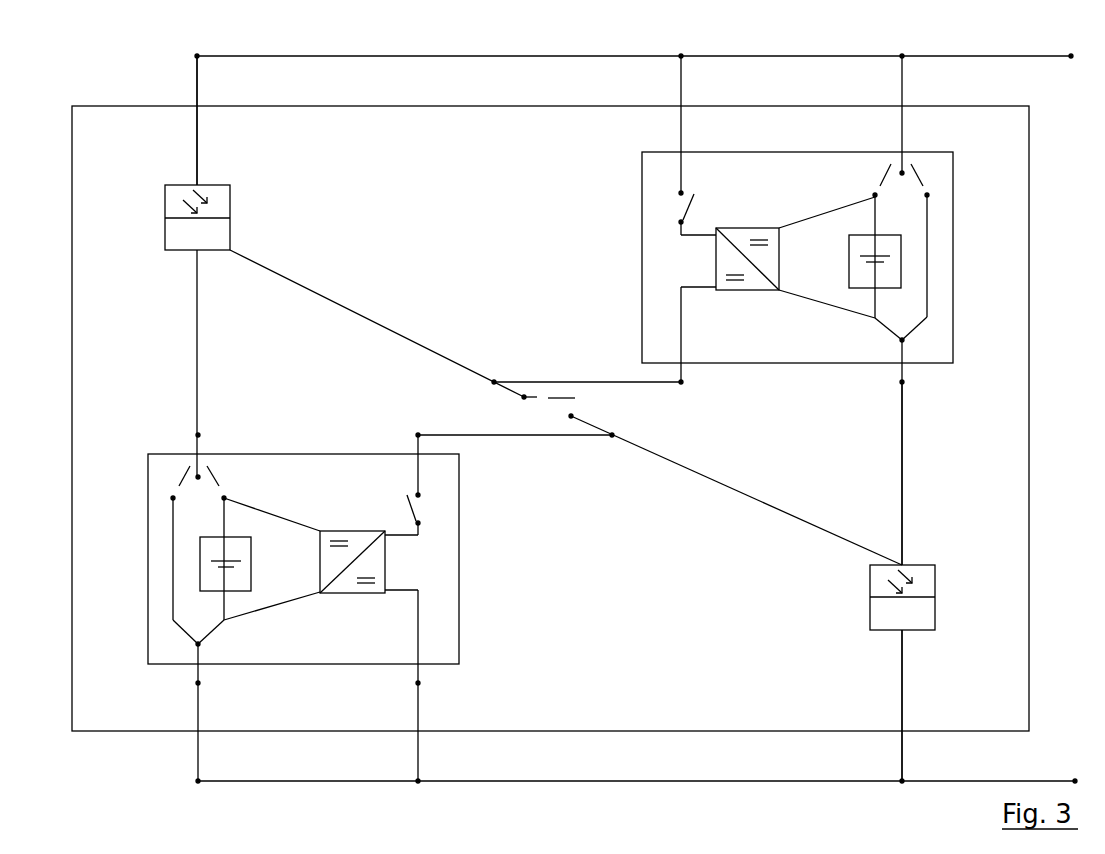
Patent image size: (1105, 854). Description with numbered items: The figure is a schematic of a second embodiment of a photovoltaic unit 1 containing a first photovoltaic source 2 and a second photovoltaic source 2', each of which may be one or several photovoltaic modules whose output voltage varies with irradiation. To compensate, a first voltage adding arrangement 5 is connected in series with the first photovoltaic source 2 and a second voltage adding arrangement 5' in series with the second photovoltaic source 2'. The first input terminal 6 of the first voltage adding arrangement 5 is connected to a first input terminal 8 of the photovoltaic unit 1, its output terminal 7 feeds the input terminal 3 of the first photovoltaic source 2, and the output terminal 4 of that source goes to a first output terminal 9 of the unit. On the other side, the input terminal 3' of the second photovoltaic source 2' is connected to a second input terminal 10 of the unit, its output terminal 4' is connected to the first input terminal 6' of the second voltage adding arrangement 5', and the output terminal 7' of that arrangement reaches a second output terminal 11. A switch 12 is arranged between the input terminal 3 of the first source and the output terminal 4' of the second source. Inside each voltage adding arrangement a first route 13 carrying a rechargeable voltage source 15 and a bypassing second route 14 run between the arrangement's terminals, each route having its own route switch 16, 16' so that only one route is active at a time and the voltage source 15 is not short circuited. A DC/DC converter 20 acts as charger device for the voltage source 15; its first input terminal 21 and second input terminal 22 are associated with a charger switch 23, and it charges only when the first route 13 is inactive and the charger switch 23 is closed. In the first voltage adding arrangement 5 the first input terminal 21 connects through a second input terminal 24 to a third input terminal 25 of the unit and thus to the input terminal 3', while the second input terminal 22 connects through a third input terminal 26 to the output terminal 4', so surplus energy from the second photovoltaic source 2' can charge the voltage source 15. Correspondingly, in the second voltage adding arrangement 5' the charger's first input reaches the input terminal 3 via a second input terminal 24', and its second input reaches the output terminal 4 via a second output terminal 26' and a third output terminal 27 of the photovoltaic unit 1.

The photovoltaic unit 1 is at (108, 120).
The first photovoltaic source 2 is at (228, 217).
The second photovoltaic source 2' is at (870, 597).
The input terminal of first photovoltaic source 3 is at (168, 363).
The input terminal of second photovoltaic source 3' is at (874, 705).
The output terminal of first photovoltaic source 4 is at (223, 120).
The output terminal of second photovoltaic source 4' is at (938, 473).
The first voltage adding arrangement 5 is at (332, 559).
The second voltage adding arrangement 5' is at (764, 257).
The first input terminal of first voltage adding arrangement 6 is at (226, 712).
The first input terminal of second voltage adding arrangement 6' is at (873, 452).
The output terminal of first voltage adding arrangement 7 is at (224, 407).
The output terminal of second voltage adding arrangement 7' is at (872, 122).
The first input terminal of photovoltaic unit 8 is at (200, 781).
The first output terminal of photovoltaic unit 9 is at (199, 58).
The second input terminal of photovoltaic unit 10 is at (904, 779).
The second output terminal of photovoltaic unit 11 is at (904, 58).
The switch 12 is at (548, 398).
The first route 13 is at (214, 632).
The second route 14 is at (173, 562).
The voltage source 15 is at (251, 562).
The route switch 16 is at (550, 332).
The route switch 16' is at (557, 330).
The DC/DC converter 20 is at (386, 560).
The first input terminal of charger device 21 is at (390, 598).
The second input terminal of charger device 22 is at (398, 528).
The charger switch 23 is at (416, 506).
The second input terminal of first voltage adding arrangement 24 is at (455, 697).
The second input terminal of second voltage adding arrangement 24' is at (615, 358).
The third input terminal of photovoltaic unit 25 is at (420, 781).
The third input terminal of first voltage adding arrangement 26 is at (494, 445).
The second output terminal of second voltage adding arrangement 26' is at (646, 125).
The third output terminal of photovoltaic unit 27 is at (683, 58).